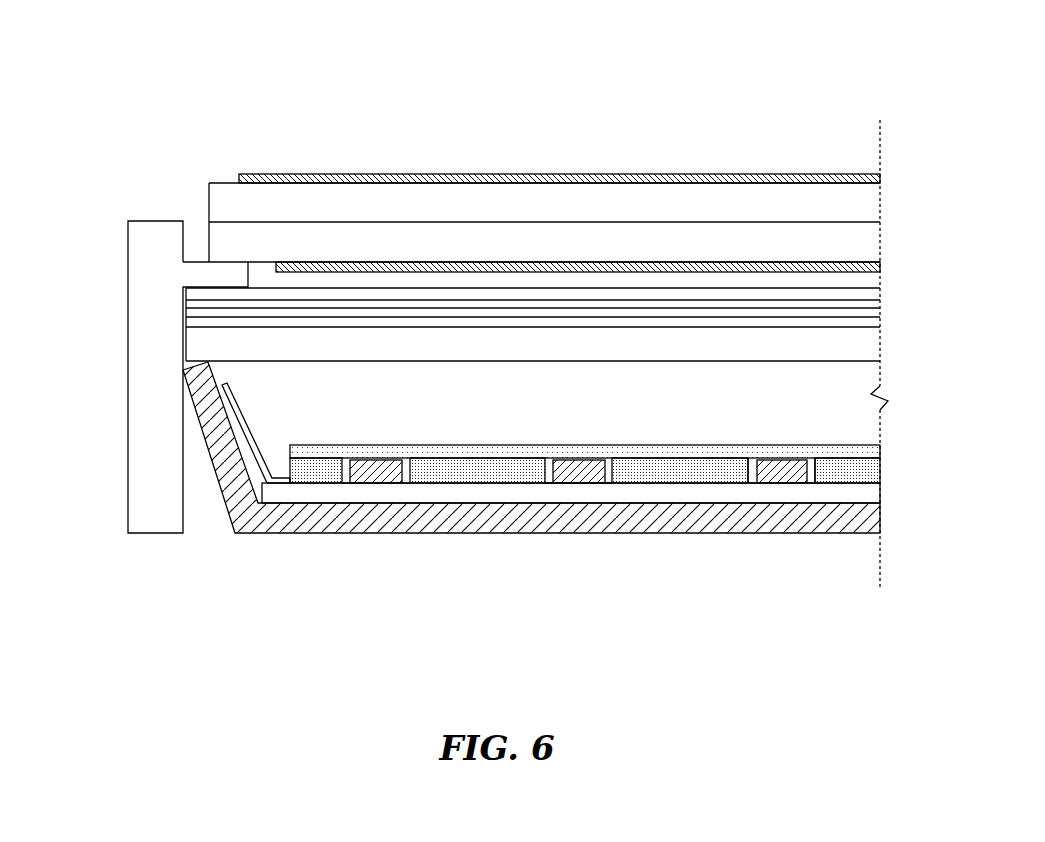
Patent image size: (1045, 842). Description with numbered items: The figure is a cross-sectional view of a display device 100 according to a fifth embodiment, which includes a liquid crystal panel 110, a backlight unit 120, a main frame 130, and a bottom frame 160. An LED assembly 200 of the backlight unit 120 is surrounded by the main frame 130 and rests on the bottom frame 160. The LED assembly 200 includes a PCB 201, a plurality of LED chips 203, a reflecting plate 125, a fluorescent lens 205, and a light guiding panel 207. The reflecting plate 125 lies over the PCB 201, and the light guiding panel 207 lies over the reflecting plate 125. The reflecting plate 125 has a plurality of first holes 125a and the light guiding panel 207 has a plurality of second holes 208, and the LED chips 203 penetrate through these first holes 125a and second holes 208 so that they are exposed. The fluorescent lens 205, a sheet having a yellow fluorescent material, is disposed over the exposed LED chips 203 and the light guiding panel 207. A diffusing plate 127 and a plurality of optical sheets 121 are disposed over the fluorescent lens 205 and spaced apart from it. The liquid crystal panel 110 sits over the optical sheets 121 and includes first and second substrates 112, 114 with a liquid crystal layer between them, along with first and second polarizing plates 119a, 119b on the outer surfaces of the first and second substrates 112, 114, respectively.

The display device 100 is at (823, 107).
The liquid crystal panel 110 is at (531, 162).
The first substrate 112 is at (540, 240).
The second substrate 114 is at (487, 200).
The first polarizing plate 119a is at (690, 262).
The second polarizing plate 119b is at (633, 178).
The backlight unit 120 is at (565, 493).
The optical sheets 121 is at (864, 304).
The reflecting plate 125 is at (291, 484).
The first holes 125a is at (604, 488).
The diffusing plate 127 is at (663, 343).
The main frame 130 is at (150, 409).
The bottom frame 160 is at (262, 512).
The LED assembly 200 is at (571, 569).
The PCB 201 is at (333, 493).
The LED chips 203 is at (378, 470).
The fluorescent lens 205 is at (436, 456).
The light guiding panel 207 is at (498, 462).
The second holes 208 is at (750, 461).